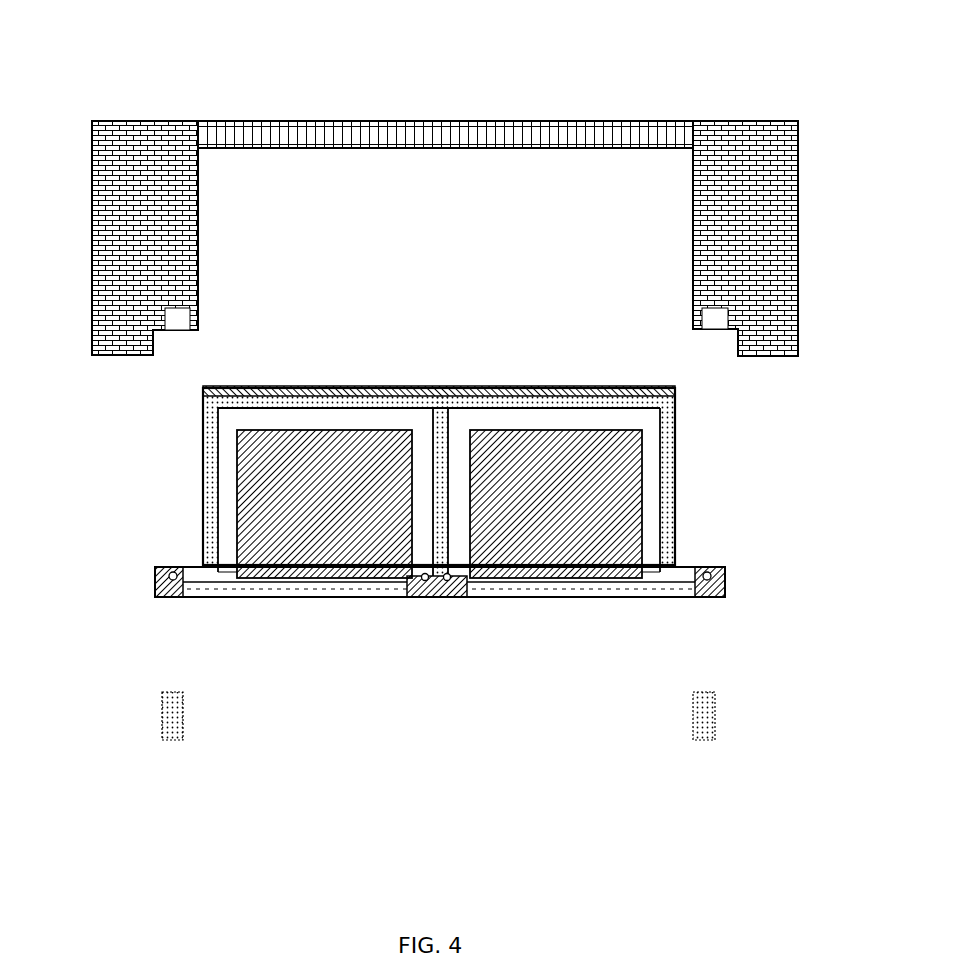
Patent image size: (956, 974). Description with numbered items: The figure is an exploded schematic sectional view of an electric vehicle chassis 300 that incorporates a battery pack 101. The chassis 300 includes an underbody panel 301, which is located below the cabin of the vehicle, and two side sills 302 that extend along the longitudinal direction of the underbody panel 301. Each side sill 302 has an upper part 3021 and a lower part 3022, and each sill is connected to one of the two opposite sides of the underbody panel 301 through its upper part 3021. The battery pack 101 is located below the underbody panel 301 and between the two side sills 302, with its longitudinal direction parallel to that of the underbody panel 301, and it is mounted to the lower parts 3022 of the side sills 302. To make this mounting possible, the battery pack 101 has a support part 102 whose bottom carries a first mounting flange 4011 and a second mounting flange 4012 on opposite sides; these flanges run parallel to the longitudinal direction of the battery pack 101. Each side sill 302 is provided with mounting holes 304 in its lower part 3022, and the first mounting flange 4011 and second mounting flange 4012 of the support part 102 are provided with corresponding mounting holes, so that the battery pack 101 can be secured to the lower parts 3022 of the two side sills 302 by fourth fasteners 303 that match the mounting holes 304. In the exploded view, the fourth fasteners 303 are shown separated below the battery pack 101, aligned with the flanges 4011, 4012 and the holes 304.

The electric vehicle chassis 300 is at (174, 26).
The underbody panel 301 is at (343, 135).
The side sill 302 is at (180, 130).
The upper part 3021 is at (118, 175).
The lower part 3022 is at (110, 305).
The mounting hole 304 is at (180, 320).
The fourth fastener 303 is at (165, 735).
The support part 102 is at (675, 442).
The battery pack 101 is at (437, 614).
The first mounting flange 4011 is at (195, 565).
The second mounting flange 4012 is at (683, 565).